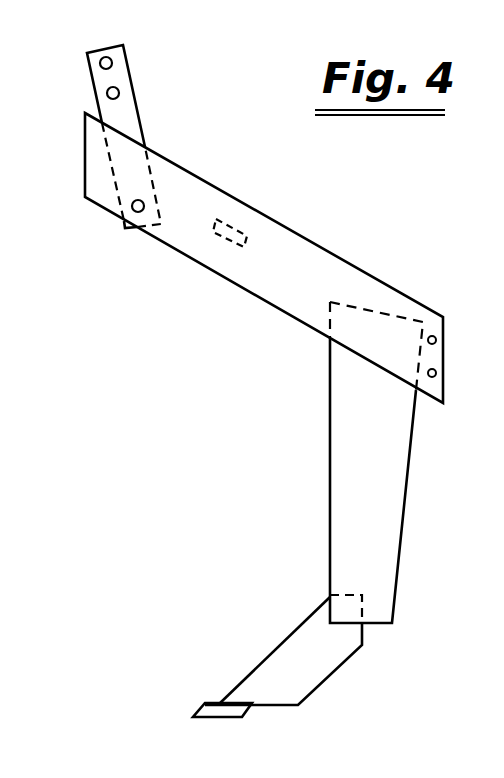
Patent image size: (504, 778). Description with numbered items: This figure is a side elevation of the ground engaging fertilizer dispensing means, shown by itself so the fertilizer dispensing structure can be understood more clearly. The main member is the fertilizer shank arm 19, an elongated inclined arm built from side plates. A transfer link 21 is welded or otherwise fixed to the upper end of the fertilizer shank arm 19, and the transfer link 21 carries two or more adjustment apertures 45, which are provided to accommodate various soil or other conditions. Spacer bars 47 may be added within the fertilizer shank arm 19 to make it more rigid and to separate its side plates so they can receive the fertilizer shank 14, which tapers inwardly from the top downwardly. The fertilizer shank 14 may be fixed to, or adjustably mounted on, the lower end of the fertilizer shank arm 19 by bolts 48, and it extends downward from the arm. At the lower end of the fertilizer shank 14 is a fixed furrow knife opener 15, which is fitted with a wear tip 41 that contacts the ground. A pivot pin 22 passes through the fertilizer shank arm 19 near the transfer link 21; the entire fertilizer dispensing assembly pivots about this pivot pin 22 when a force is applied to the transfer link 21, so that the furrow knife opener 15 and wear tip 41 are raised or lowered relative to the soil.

The fertilizer shank 14 is at (350, 458).
The furrow knife opener 15 is at (295, 647).
The fertilizer shank arm 19 is at (298, 258).
The transfer link 21 is at (128, 117).
The pivot pin 22 is at (141, 212).
The wear tip 41 is at (208, 712).
The adjustment apertures 45 is at (119, 91).
The spacer bars 47 is at (226, 220).
The bolts 48 is at (437, 372).